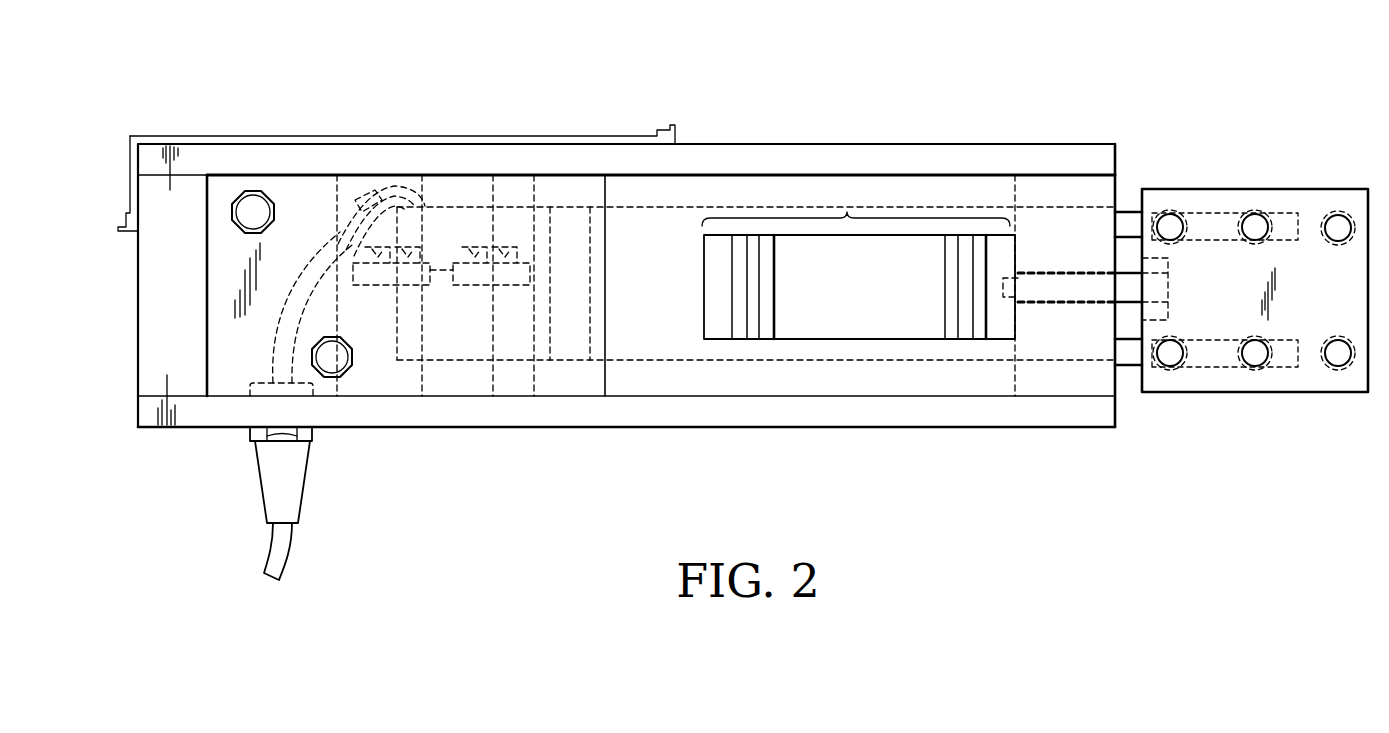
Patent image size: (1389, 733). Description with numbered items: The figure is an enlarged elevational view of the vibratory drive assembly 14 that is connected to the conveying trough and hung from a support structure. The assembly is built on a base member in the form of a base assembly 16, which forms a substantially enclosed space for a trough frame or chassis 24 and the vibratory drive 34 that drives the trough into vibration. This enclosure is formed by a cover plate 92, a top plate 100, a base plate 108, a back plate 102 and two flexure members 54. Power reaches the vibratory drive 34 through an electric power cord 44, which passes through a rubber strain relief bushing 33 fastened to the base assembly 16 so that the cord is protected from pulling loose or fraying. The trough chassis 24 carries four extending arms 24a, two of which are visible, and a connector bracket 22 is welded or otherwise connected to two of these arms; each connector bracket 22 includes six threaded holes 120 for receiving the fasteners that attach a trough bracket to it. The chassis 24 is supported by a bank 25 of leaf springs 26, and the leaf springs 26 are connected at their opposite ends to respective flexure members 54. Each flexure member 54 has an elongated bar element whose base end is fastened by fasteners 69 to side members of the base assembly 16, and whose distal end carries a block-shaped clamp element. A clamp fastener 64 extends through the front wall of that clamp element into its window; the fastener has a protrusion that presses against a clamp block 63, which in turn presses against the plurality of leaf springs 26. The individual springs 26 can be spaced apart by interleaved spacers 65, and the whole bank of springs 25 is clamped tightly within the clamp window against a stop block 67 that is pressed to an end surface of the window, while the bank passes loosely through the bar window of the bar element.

The vibratory drive assembly 14 is at (560, 90).
The base assembly 16 is at (562, 428).
The connector brackets 22 is at (1295, 190).
The trough chassis 24 is at (913, 208).
The extending arms 24a is at (1125, 212).
The bank of leaf springs 25 is at (856, 205).
The leaf springs 26 is at (747, 302).
The rubber strain relief bushing 33 is at (305, 480).
The vibratory drive 34 is at (443, 205).
The electric power cord 44 is at (295, 545).
The flexure members 54 is at (206, 267).
The clamp block 63 is at (1005, 326).
The clamp fastener 64 is at (1170, 278).
The interleaved spacers 65 is at (754, 330).
The stop block 67 is at (713, 288).
The fasteners 69 is at (252, 191).
The cover plate 92 is at (373, 136).
The top plate 100 is at (748, 144).
The back plate 102 is at (145, 307).
The base plate 108 is at (895, 435).
The threaded holes 120 is at (1333, 241).